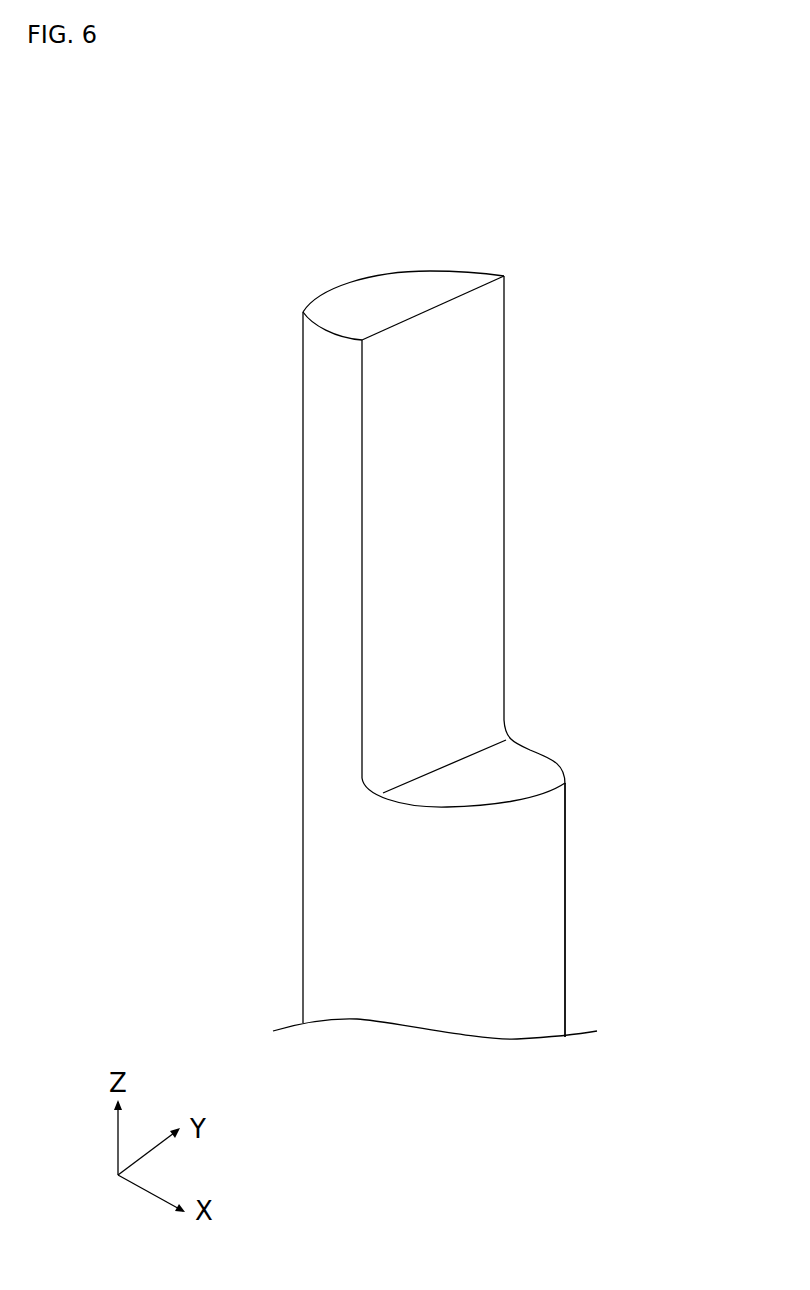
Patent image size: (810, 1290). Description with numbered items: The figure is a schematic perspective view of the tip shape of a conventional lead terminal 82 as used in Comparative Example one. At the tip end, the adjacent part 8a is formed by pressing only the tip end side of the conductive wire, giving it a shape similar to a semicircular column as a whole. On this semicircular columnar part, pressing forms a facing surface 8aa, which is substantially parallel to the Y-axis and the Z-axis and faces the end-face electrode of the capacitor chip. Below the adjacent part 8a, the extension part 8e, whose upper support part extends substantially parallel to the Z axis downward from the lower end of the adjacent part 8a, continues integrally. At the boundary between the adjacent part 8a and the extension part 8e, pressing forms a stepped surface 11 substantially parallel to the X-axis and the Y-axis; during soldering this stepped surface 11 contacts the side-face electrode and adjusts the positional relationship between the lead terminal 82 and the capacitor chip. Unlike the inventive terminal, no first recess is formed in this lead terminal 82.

The lead terminal 82 is at (566, 242).
The adjacent part 8a is at (334, 498).
The facing surface 8aa is at (447, 530).
The stepped surface 11 is at (537, 773).
The extension part 8e is at (339, 920).